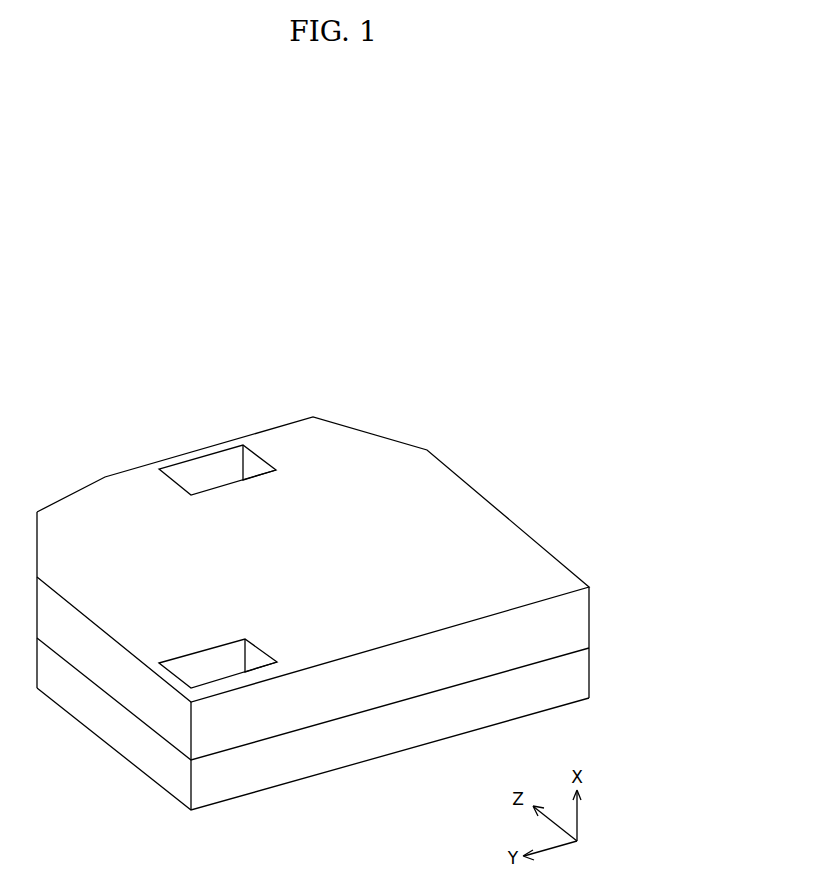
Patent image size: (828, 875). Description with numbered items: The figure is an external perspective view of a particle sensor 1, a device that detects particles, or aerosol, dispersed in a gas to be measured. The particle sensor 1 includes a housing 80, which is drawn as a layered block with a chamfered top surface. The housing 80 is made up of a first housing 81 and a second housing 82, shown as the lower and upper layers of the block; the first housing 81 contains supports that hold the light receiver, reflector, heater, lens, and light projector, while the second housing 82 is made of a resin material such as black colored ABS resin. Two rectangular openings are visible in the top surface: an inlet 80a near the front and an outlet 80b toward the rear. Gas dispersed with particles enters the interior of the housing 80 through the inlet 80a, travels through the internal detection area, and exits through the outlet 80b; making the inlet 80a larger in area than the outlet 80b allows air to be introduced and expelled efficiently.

The particle sensor 1 is at (368, 601).
The housing 80 is at (368, 613).
The first housing 81 is at (343, 724).
The second housing 82 is at (578, 628).
The inlet 80a is at (195, 673).
The outlet 80b is at (190, 480).